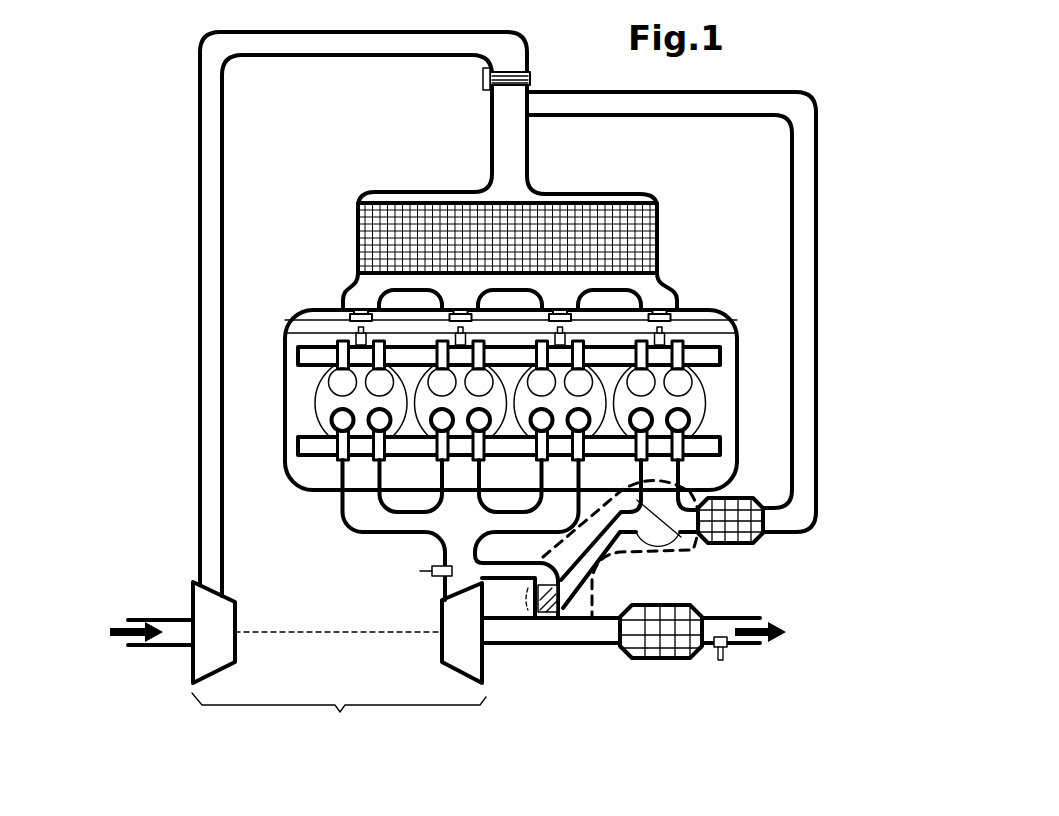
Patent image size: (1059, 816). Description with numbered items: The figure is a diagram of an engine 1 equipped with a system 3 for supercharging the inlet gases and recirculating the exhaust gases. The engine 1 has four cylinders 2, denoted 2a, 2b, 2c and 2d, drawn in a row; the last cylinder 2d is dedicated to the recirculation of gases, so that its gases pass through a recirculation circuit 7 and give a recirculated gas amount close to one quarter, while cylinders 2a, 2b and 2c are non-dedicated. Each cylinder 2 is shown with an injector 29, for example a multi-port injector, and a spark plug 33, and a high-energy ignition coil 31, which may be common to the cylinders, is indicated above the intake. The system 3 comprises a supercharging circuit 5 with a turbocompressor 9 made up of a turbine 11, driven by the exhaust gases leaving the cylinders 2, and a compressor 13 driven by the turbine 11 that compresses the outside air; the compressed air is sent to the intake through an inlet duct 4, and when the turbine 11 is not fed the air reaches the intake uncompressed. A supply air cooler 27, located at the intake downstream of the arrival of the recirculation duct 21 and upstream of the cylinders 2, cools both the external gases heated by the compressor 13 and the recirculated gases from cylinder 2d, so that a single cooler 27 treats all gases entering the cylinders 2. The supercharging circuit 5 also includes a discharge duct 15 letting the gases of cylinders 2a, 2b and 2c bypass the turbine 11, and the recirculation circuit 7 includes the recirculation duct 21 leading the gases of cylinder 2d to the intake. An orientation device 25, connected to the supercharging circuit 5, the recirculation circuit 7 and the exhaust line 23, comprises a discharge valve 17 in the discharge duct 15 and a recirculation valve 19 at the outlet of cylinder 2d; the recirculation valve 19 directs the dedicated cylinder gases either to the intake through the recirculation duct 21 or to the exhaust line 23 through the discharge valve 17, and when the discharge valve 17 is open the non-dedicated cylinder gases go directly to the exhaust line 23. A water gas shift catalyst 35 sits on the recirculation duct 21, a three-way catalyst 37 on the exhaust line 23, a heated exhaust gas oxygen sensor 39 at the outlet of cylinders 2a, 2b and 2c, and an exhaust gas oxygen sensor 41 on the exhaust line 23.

The engine 1 is at (128, 132).
The cylinders 2 is at (260, 348).
The non-dedicated cylinder 2a is at (325, 398).
The non-dedicated cylinder 2b is at (440, 410).
The non-dedicated cylinder 2c is at (540, 410).
The cylinder dedicated to the recirculation of gases 2d is at (735, 400).
The system 3 is at (676, 722).
The inlet duct 4 is at (310, 45).
The supercharging circuit 5 is at (506, 695).
The recirculation circuit 7 is at (793, 562).
The turbocompressor 9 is at (298, 652).
The turbine 11 is at (455, 640).
The compressor 13 is at (222, 625).
The discharge duct 15 is at (507, 570).
The discharge valve 17 is at (577, 650).
The recirculation valve 19 is at (668, 540).
The recirculation duct 21 is at (800, 185).
The exhaust line 23 is at (598, 637).
The orientation device 25 is at (640, 563).
The supply air cooler 27 is at (345, 212).
The injector 29 is at (358, 310).
The high-energy ignition coil 31 is at (650, 225).
The spark plug 33 is at (456, 334).
The water gas shift catalyst 35 is at (745, 498).
The three-way catalyst 37 is at (668, 650).
The heated exhaust gas oxygen sensor 39 is at (420, 571).
The exhaust gas oxygen sensor 41 is at (722, 660).